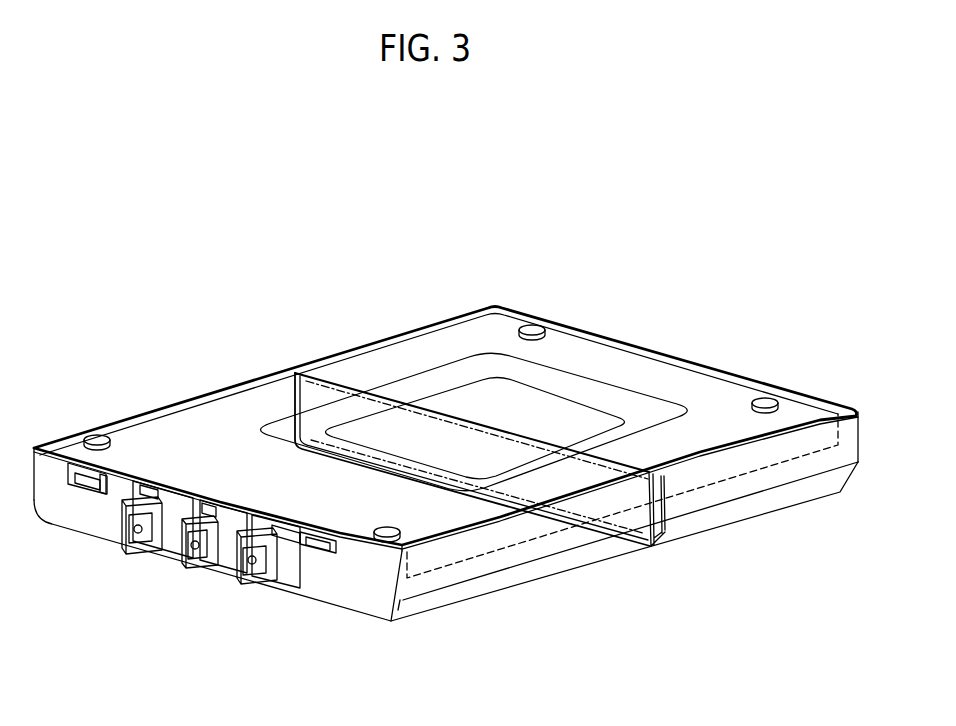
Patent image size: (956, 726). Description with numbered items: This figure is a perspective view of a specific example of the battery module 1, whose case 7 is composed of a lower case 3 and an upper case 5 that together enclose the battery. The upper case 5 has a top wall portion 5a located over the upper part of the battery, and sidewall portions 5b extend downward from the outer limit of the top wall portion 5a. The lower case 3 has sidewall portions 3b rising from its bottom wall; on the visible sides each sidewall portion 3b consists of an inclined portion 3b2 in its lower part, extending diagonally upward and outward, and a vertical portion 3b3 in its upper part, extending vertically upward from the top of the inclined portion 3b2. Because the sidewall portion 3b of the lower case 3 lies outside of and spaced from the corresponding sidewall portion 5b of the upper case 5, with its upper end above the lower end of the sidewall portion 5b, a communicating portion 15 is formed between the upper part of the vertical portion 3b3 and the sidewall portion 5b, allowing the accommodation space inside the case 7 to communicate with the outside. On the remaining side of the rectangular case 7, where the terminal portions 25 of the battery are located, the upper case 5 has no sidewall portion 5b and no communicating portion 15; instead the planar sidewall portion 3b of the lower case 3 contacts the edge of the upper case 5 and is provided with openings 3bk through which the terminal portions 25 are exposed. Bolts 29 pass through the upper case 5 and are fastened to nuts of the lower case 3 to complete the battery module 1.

The battery module 1 is at (613, 227).
The lower case 3 is at (345, 603).
The sidewall portion 3b is at (110, 599).
The inclined portion 3b2 is at (48, 522).
The vertical portion 3b3 is at (838, 549).
The openings 3bk is at (256, 520).
The upper case 5 is at (430, 338).
The top wall portion 5a is at (207, 406).
The sidewall portion 5b is at (513, 578).
The case 7 is at (392, 632).
The communicating portion 15 is at (346, 346).
The terminal portions 25 is at (143, 550).
The bolts 29 is at (535, 324).